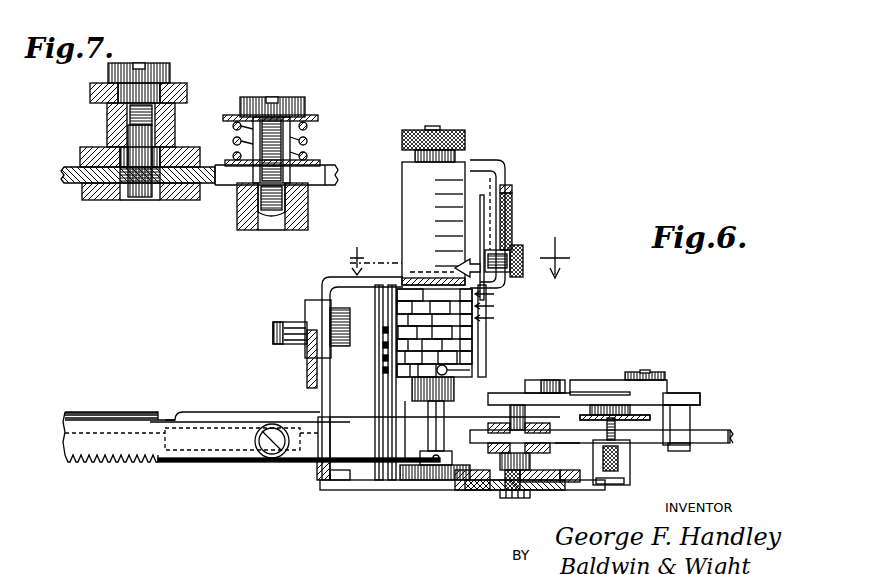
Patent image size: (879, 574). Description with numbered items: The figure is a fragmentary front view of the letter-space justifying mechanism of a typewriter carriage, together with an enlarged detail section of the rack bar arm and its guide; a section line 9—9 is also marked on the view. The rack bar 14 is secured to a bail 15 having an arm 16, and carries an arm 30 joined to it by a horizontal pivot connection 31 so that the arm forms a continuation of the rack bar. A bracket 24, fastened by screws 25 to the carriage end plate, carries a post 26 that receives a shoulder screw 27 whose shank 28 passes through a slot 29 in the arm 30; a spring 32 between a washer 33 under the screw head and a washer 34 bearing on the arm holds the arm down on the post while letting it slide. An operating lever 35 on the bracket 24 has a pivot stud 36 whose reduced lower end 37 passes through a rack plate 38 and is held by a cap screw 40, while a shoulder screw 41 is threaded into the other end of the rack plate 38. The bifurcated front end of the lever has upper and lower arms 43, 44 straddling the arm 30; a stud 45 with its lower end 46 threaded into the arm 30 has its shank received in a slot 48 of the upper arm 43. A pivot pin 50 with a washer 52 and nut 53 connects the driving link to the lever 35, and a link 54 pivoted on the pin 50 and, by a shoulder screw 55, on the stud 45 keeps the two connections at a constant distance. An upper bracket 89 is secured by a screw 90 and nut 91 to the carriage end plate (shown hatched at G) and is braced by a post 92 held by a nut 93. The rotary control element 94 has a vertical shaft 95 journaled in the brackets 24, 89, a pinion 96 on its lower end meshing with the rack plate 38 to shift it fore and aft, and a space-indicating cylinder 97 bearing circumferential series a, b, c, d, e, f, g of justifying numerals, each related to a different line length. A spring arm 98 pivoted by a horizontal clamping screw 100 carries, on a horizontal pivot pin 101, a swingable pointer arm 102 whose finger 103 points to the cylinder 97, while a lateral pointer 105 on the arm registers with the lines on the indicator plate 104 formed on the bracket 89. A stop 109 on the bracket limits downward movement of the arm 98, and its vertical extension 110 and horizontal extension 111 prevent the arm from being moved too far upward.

In FIG. 7, the shoulder screw 55 is at (160, 66).
In FIG. 6, the shoulder screw 55 is at (552, 380).
In FIG. 7, the link 54 is at (182, 92).
In FIG. 6, the link 54 is at (575, 392).
In FIG. 7, the stud 45 is at (175, 122).
In FIG. 6, the stud 45 is at (520, 405).
In FIG. 7, the shoulder screw 41 is at (128, 140).
In FIG. 7, the slot 48 is at (165, 150).
In FIG. 6, the slot 48 is at (505, 393).
In FIG. 7, the upper arm 43 is at (80, 158).
In FIG. 6, the upper arm 43 is at (488, 440).
In FIG. 7, the arm 30 is at (62, 182).
In FIG. 6, the arm 30 is at (300, 417).
In FIG. 7, the lower arm 44 is at (95, 200).
In FIG. 6, the lower arm 44 is at (462, 490).
In FIG. 7, the lower end of stud 46 is at (160, 186).
In FIG. 7, the shank 28 is at (262, 98).
In FIG. 7, the shoulder screw 27 is at (278, 100).
In FIG. 6, the shoulder screw 27 is at (612, 405).
In FIG. 7, the washer 33 is at (306, 116).
In FIG. 6, the washer 33 is at (600, 415).
In FIG. 7, the spring 32 is at (308, 128).
In FIG. 7, the washer 34 is at (315, 161).
In FIG. 6, the washer 34 is at (600, 487).
In FIG. 7, the slot 29 is at (328, 186).
In FIG. 6, the slot 29 is at (730, 430).
In FIG. 7, the post 26 is at (240, 216).
In FIG. 6, the post 26 is at (630, 465).
In FIG. 6, the rotary control element 94 is at (462, 134).
In FIG. 6, the indicator plate 104 is at (402, 174).
In FIG. 6, the horizontal extension 111 is at (486, 162).
In FIG. 6, the spring arm 98 is at (500, 186).
In FIG. 6, the vertical extension 110 is at (512, 192).
In FIG. 6, the clamping screw 100 is at (512, 222).
In FIG. 6, the pivot pin 101 is at (524, 258).
In FIG. 6, the stop 109 is at (510, 285).
In FIG. 6, the pointer 105 is at (455, 266).
In FIG. 6, the section line 9 is at (454, 257).
In FIG. 6, the upper bracket 89 is at (322, 283).
In FIG. 6, the screw 90 is at (305, 318).
In FIG. 6, the nut 91 is at (273, 336).
In FIG. 6, the strip G is at (307, 362).
In FIG. 6, the nut 93 is at (385, 492).
In FIG. 6, the series of justifying space indicating numerals d is at (383, 330).
In FIG. 6, the series of justifying space indicating numerals e is at (383, 345).
In FIG. 6, the series of justifying space indicating numerals f is at (383, 358).
In FIG. 6, the series of justifying space indicating numerals g is at (383, 370).
In FIG. 6, the pointer arm 102 is at (476, 340).
In FIG. 6, the series of justifying space indicating numerals a is at (491, 294).
In FIG. 6, the series of justifying space indicating numerals b is at (491, 306).
In FIG. 6, the series of justifying space indicating numerals c is at (491, 318).
In FIG. 6, the pointer finger 103 is at (445, 398).
In FIG. 6, the vertical shaft 95 is at (420, 455).
In FIG. 6, the space-indicating cylinder 97 is at (405, 405).
In FIG. 6, the bail arm 16 is at (245, 418).
In FIG. 6, the rack bar 14 is at (66, 452).
In FIG. 6, the bail 15 is at (128, 412).
In FIG. 6, the horizontal pivot connection 31 is at (268, 458).
In FIG. 6, the bracket 24 is at (352, 490).
In FIG. 6, the screws 25 is at (320, 480).
In FIG. 6, the post 92 is at (335, 490).
In FIG. 6, the pinion 96 is at (428, 482).
In FIG. 6, the rack plate 38 is at (480, 492).
In FIG. 6, the reduced lower end portion 37 is at (510, 498).
In FIG. 6, the cap screw 40 is at (528, 484).
In FIG. 6, the pivot stud 36 is at (568, 484).
In FIG. 6, the pivot pin 50 is at (665, 376).
In FIG. 6, the operating lever 35 is at (683, 400).
In FIG. 6, the washer 52 is at (690, 422).
In FIG. 6, the nut 53 is at (690, 447).